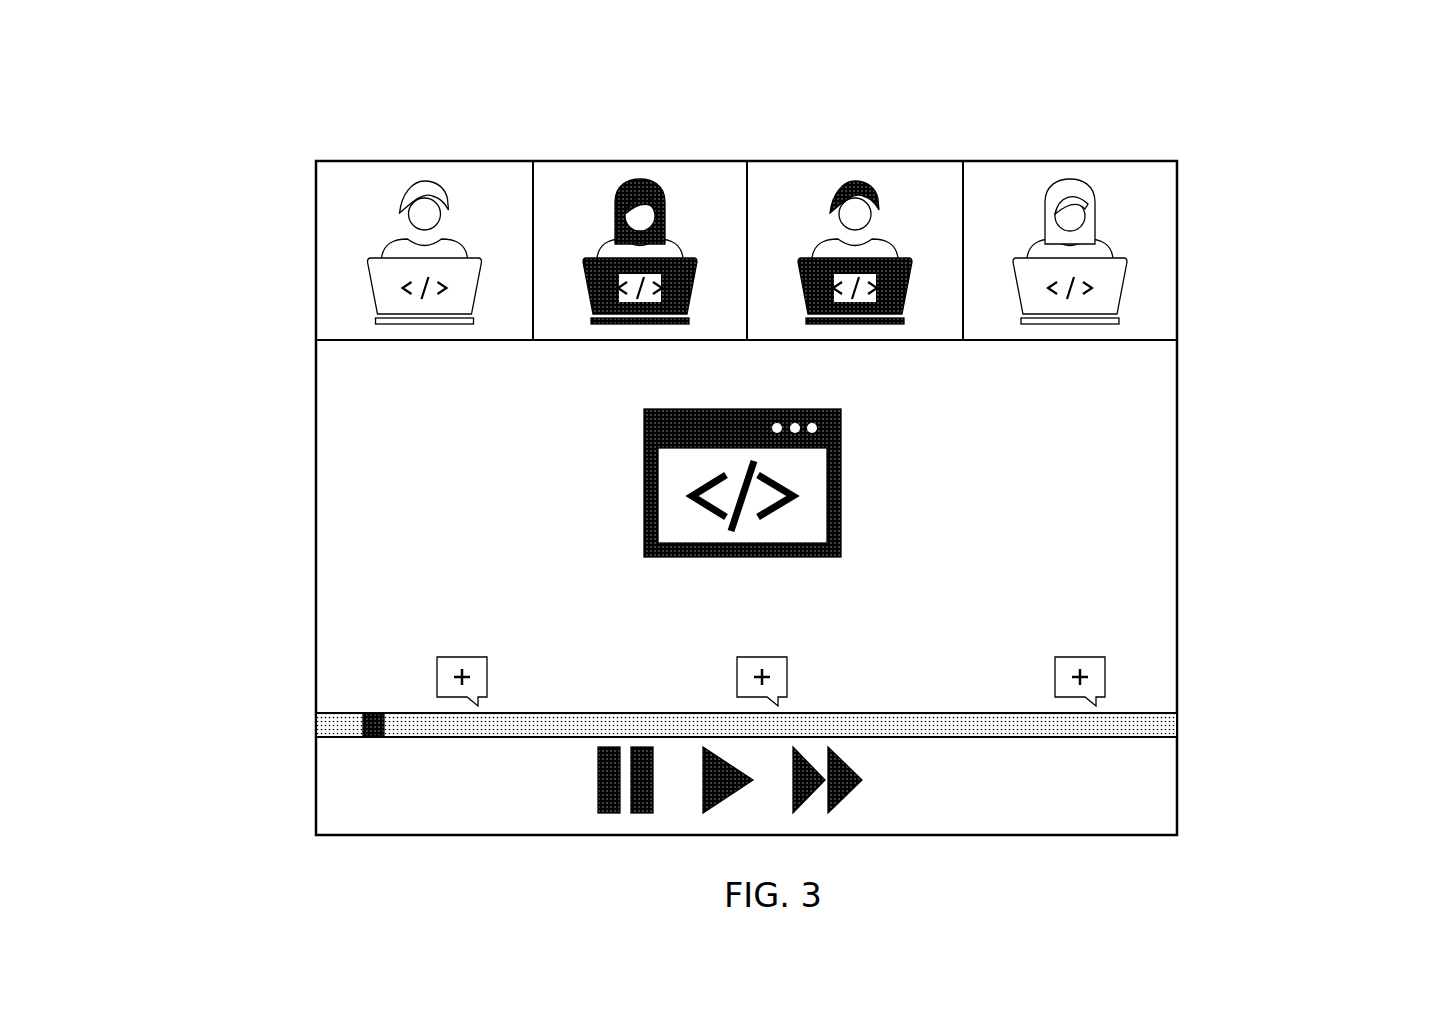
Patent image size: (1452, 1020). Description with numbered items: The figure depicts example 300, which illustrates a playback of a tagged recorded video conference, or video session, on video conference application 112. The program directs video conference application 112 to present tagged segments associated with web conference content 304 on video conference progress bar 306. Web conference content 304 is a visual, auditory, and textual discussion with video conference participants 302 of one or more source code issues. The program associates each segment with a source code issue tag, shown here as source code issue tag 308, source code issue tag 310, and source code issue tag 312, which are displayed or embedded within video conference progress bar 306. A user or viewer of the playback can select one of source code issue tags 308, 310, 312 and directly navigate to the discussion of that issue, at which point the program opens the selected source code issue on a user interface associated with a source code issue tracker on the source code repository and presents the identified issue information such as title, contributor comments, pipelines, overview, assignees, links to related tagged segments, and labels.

The example 300 is at (1257, 88).
The video conference application 112 is at (930, 125).
The video conference participants 302 is at (1316, 204).
The web conference content 304 is at (900, 379).
The video conference progress bar 306 is at (186, 696).
The source code issue tag 308 is at (460, 657).
The source code issue tag 310 is at (852, 637).
The source code issue tag 312 is at (1078, 657).